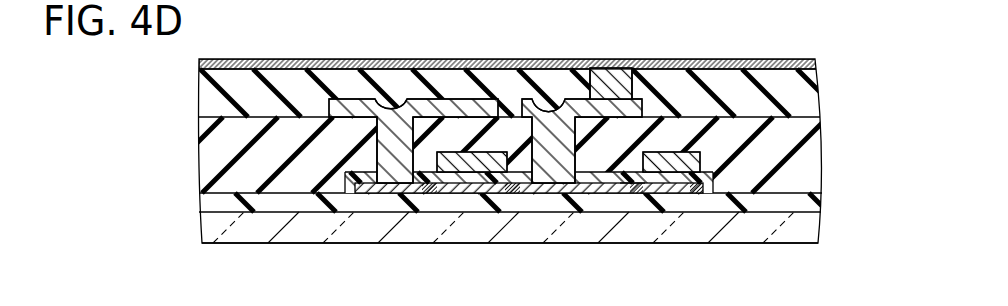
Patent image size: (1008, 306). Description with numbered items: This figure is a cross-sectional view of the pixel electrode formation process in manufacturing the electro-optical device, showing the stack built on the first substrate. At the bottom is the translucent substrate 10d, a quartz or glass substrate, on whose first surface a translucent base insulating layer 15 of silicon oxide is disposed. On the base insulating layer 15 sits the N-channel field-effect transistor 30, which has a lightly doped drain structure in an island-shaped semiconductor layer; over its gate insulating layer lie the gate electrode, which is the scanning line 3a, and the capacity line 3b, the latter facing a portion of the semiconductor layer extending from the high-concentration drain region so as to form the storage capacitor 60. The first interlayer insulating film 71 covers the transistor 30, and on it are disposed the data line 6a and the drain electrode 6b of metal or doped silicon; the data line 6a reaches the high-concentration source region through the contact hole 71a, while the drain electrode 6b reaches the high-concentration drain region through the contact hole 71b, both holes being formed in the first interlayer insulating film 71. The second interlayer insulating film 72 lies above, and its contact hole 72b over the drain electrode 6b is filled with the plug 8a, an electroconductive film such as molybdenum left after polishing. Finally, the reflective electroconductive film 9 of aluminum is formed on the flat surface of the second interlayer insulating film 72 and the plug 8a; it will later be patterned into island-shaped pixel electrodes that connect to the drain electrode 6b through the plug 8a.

The data line 6a is at (368, 98).
The drain electrode 6b is at (536, 95).
The reflective electroconductive film 9 is at (452, 58).
The plug 8a is at (597, 68).
The contact hole 72b is at (626, 84).
The second interlayer insulating film 72 is at (823, 98).
The first interlayer insulating film 71 is at (824, 158).
The translucent base insulating layer 15 is at (822, 204).
The translucent substrate 10d is at (821, 233).
The contact hole 71a is at (380, 137).
The contact hole 71b is at (574, 135).
The field-effect transistor 30 is at (458, 216).
The scanning line 3a is at (485, 168).
The capacity line 3b is at (680, 168).
The storage capacitor 60 is at (640, 209).